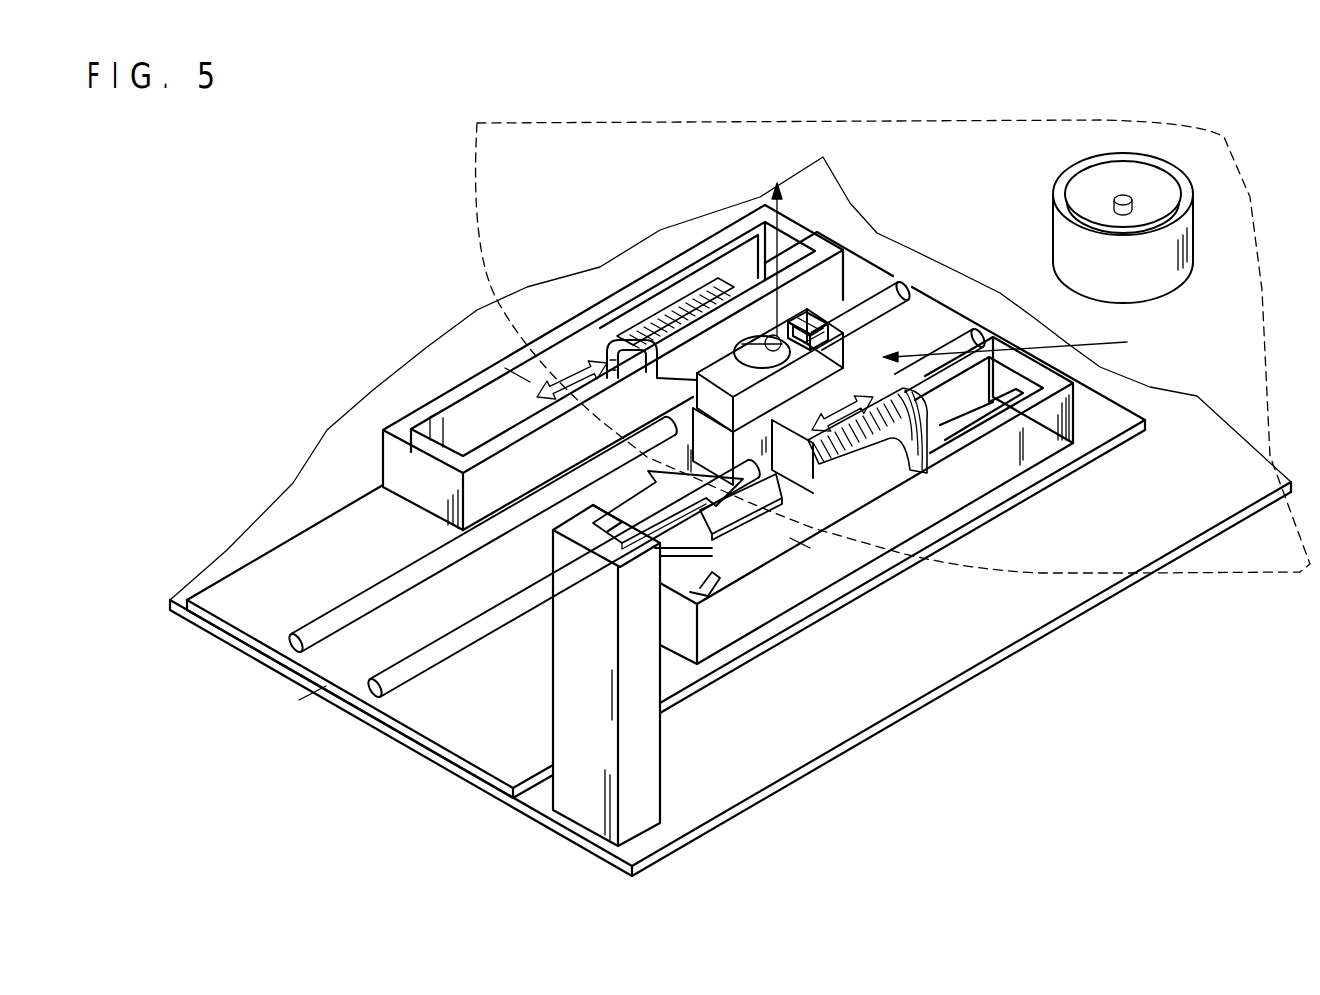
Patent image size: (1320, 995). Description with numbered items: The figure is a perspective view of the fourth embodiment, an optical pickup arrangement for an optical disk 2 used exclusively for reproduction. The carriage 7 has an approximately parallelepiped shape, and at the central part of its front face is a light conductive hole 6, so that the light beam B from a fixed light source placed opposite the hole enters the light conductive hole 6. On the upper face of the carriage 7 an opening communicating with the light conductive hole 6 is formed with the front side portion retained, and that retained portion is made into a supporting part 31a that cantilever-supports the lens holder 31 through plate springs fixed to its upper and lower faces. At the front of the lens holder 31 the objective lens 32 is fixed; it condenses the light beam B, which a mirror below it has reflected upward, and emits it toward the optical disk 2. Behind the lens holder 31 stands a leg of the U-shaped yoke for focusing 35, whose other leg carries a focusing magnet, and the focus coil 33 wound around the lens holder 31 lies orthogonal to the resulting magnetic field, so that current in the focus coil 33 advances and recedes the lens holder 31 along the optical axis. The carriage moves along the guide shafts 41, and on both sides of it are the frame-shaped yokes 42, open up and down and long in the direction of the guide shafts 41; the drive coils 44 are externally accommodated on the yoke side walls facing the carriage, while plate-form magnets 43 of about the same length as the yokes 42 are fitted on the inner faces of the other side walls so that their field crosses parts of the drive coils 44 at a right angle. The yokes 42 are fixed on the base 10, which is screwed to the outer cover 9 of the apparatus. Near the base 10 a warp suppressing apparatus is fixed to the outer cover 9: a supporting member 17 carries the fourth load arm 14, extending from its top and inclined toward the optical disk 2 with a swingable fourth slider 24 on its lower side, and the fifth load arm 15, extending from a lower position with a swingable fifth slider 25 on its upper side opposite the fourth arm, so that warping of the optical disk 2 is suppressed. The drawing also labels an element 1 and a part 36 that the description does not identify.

The cup-shaped workpiece 1 is at (1186, 219).
The optical disk 2 is at (1257, 576).
The light conductive hole 6 is at (692, 436).
The carriage 7 is at (1162, 352).
The outer cover 9 is at (703, 826).
The base 10 is at (955, 530).
The fourth load arm 14 is at (652, 515).
The fifth load arm 15 is at (695, 552).
The supporting member 17 is at (565, 798).
The fourth slider 24 is at (765, 520).
The fifth slider 25 is at (745, 548).
The lens holder 31 is at (832, 326).
The supporting part 31a is at (637, 340).
The objective lens 32 is at (768, 340).
The focus coil 33 is at (828, 328).
The yoke for focusing 35 is at (850, 335).
The sensor part 36 is at (840, 322).
The guide shafts 41 is at (292, 648).
The yokes 42 is at (405, 437).
The magnets 43 is at (517, 373).
The drive coils 44 is at (687, 293).
The light beam B is at (313, 690).